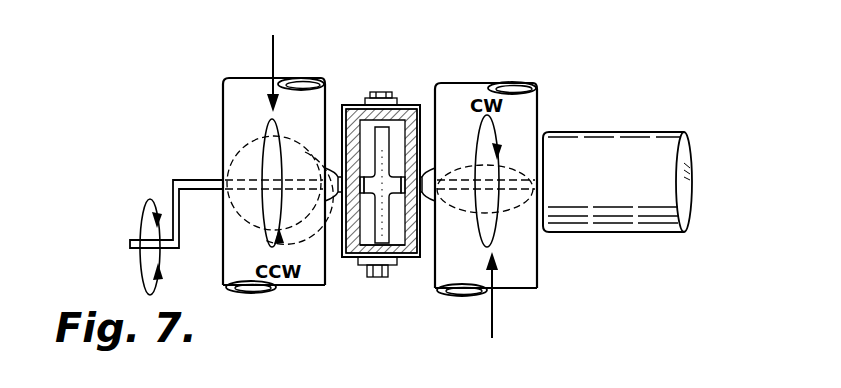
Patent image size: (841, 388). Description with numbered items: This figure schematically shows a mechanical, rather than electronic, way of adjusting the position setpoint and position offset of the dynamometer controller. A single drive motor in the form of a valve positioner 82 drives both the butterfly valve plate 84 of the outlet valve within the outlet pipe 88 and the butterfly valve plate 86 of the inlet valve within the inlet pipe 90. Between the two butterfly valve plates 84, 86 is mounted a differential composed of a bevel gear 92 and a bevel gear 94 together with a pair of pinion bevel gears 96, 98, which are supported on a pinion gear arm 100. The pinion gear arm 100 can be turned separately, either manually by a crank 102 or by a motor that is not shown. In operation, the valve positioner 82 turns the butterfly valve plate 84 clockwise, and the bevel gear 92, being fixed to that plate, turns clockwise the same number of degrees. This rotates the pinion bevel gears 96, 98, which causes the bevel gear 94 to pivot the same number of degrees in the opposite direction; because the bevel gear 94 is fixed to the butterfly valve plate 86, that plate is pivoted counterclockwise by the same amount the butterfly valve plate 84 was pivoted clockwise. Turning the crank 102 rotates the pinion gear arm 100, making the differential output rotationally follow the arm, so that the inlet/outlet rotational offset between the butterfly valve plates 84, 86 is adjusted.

The valve positioner 82 is at (643, 136).
The butterfly valve plate 84 is at (535, 150).
The butterfly valve plate 86 is at (228, 140).
The outlet pipe 88 is at (540, 260).
The inlet pipe 90 is at (238, 95).
The bevel gear 92 is at (430, 117).
The bevel gear 94 is at (333, 115).
The bevel gear 96 is at (365, 103).
The bevel gear 98 is at (400, 262).
The pinion gear arm 100 is at (355, 262).
The crank 102 is at (176, 180).